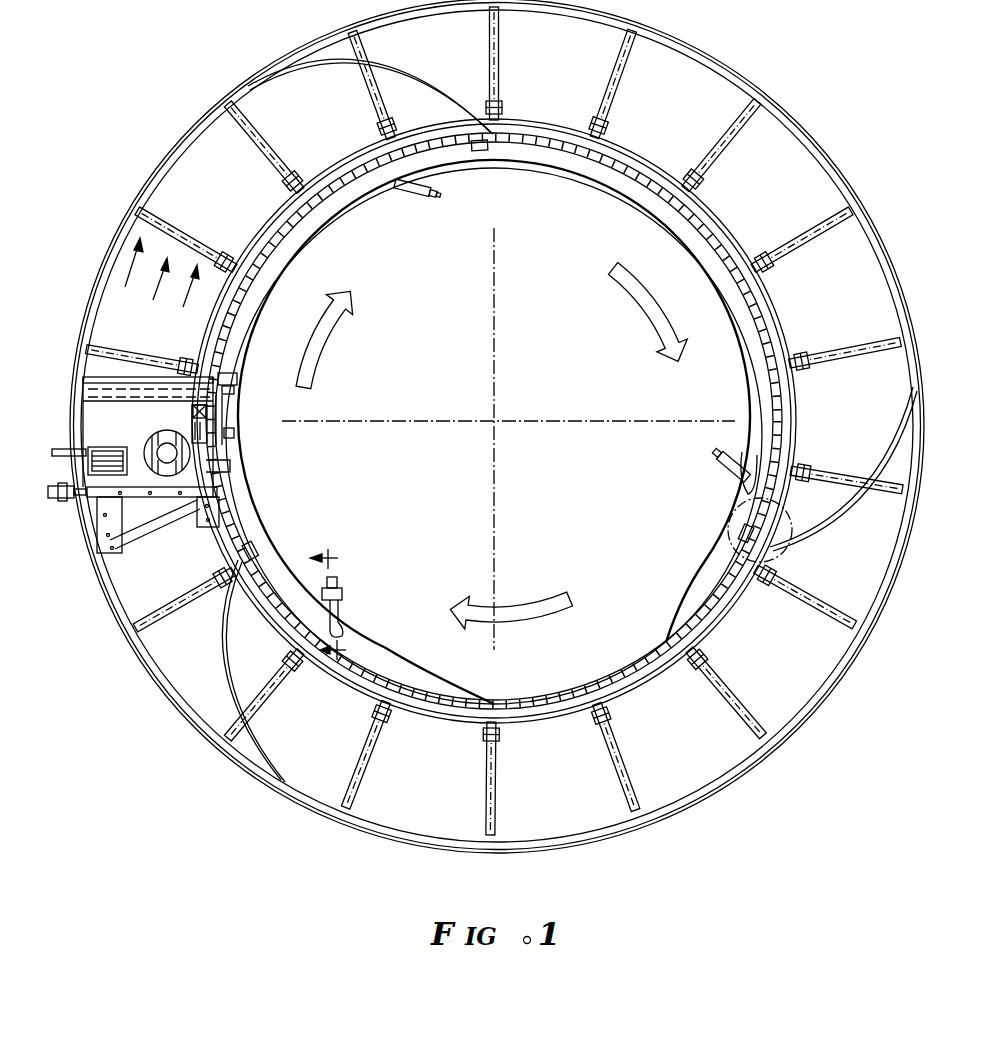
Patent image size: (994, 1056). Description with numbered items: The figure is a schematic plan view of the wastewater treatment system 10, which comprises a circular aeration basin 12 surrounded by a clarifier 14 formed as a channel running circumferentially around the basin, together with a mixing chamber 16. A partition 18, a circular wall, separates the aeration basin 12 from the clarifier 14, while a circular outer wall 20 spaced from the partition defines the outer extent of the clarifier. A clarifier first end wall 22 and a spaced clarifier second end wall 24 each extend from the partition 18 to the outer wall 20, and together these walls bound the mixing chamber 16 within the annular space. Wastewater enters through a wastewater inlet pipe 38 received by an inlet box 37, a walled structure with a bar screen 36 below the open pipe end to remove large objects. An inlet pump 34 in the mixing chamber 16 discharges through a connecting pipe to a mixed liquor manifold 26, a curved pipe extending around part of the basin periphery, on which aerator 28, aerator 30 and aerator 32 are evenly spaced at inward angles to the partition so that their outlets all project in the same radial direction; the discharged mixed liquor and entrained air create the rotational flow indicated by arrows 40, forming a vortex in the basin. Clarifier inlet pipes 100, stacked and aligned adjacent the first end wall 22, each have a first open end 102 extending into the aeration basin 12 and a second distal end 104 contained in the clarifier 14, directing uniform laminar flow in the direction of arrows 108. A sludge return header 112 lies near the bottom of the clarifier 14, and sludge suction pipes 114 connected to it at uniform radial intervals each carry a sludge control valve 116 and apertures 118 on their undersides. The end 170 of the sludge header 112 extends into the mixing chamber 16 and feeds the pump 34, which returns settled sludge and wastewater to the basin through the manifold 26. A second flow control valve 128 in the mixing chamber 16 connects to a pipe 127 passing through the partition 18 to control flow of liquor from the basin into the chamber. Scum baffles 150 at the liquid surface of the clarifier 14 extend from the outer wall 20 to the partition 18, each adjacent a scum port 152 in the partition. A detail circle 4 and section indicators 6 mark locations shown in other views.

The section detail circle 4 is at (729, 524).
The section line 6 is at (336, 604).
The wastewater treatment system 10 is at (728, 58).
The aeration basin 12 is at (495, 240).
The clarifier 14 is at (808, 178).
The mixing chamber 16 is at (84, 413).
The partition 18 is at (610, 170).
The outer wall 20 is at (858, 198).
The clarifier first end wall 22 is at (228, 423).
The clarifier second end wall 24 is at (236, 482).
The mixed liquor manifold 26 is at (596, 188).
The aerator 28 is at (336, 586).
The aerator 30 is at (417, 197).
The aerator 32 is at (740, 457).
The inlet pump 34 is at (157, 440).
The bar screen 36 is at (190, 421).
The inlet box 37 is at (108, 441).
The wastewater inlet pipe 38 is at (62, 442).
The arrows 40 is at (323, 347).
The clarifier inlet pipes 100 is at (238, 379).
The first open end 102 is at (236, 391).
The second distal end 104 is at (120, 382).
The arrows 108 is at (151, 286).
The sludge return header 112 is at (258, 233).
The sludge suction pipes 114 is at (624, 84).
The sludge control valve 116 is at (392, 117).
The apertures 118 is at (270, 135).
The pipe 127 is at (236, 432).
The second flow control valve 128 is at (194, 410).
The scum baffles 150 is at (313, 58).
The scum port 152 is at (480, 150).
The end of sludge header 170 is at (208, 467).